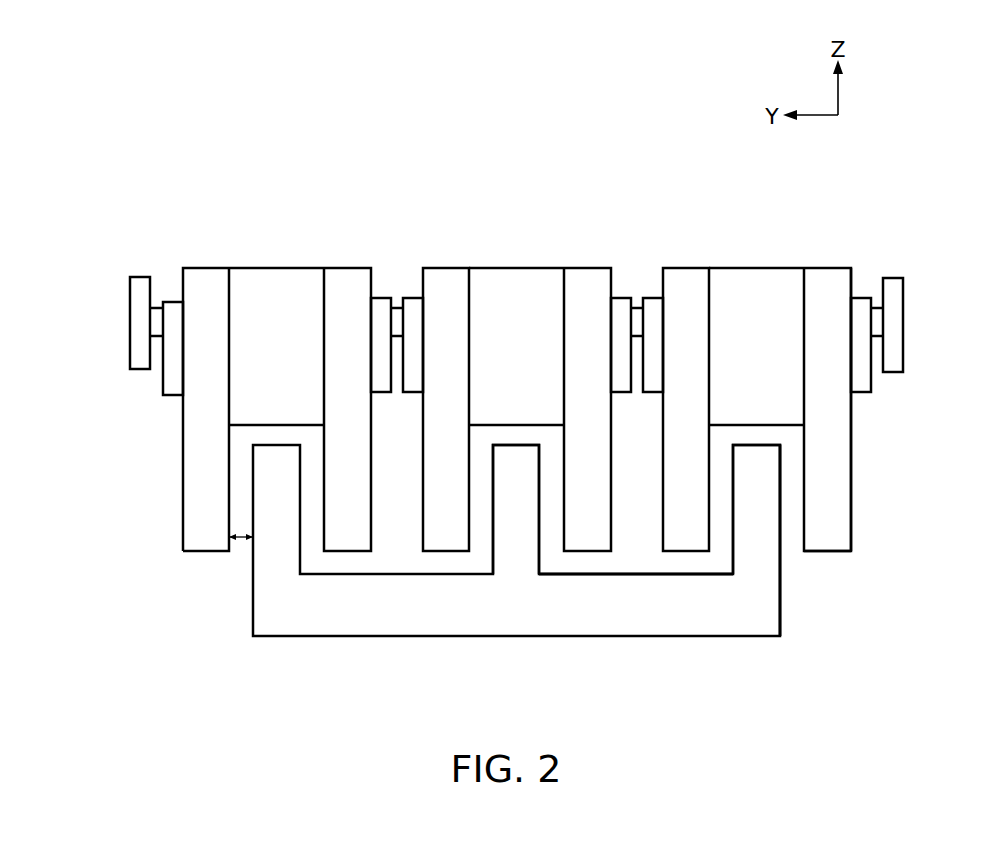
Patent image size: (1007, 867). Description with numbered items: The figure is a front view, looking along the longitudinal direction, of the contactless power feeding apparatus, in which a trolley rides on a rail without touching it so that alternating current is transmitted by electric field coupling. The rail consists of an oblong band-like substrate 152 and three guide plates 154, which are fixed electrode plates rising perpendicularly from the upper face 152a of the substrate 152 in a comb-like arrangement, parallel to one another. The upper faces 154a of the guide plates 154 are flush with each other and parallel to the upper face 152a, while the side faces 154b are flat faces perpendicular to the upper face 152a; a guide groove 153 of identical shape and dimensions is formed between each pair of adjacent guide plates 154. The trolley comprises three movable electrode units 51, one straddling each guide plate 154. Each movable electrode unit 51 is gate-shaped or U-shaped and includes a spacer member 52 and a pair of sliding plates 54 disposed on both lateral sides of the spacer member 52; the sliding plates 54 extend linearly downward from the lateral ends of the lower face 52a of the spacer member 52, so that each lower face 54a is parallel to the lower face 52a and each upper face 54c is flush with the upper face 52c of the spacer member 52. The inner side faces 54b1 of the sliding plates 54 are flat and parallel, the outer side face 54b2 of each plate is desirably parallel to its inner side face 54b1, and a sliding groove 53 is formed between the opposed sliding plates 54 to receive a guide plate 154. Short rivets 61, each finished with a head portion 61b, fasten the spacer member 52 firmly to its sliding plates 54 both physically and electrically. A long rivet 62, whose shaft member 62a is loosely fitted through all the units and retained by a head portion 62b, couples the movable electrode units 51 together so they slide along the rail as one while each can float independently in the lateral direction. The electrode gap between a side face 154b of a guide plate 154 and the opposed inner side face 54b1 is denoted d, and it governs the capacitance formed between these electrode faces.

The movable electrode unit 51 is at (302, 268).
The spacer member 52 is at (765, 283).
The lower face of spacer member 52a is at (512, 425).
The upper face of spacer member 52c is at (503, 268).
The sliding groove 53 is at (720, 448).
The sliding plate 54 is at (830, 283).
The lower face of sliding plate 54a is at (585, 552).
The inner side face of sliding plate 54b1 is at (803, 536).
The outer side face of sliding plate 54b2 is at (852, 474).
The upper face of sliding plate 54c is at (449, 268).
The short rivet 61 is at (175, 302).
The head portion of short rivet 61b is at (871, 383).
The long rivet 62 is at (142, 277).
The shaft member of long rivet 62a is at (878, 306).
The head portion of long rivet 62b is at (903, 291).
The substrate 152 is at (459, 610).
The upper face of substrate 152a is at (552, 573).
The guide groove 153 is at (648, 558).
The guide plate 154 is at (760, 558).
The upper face of guide plate 154a is at (525, 445).
The side face of guide plate 154b is at (780, 585).
The electrode gap d is at (243, 542).